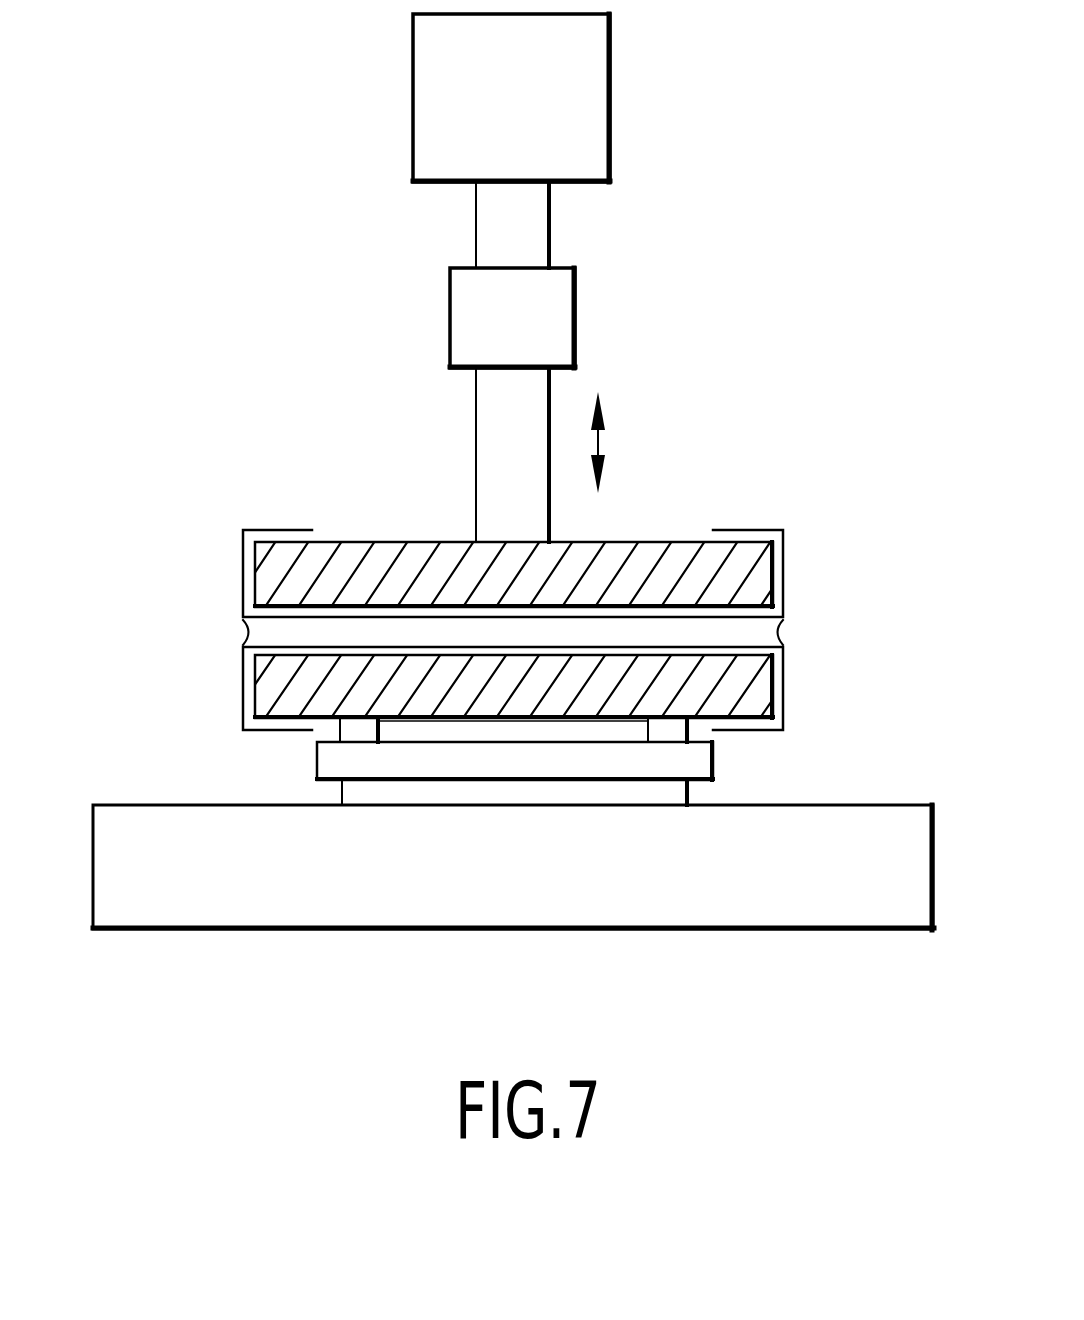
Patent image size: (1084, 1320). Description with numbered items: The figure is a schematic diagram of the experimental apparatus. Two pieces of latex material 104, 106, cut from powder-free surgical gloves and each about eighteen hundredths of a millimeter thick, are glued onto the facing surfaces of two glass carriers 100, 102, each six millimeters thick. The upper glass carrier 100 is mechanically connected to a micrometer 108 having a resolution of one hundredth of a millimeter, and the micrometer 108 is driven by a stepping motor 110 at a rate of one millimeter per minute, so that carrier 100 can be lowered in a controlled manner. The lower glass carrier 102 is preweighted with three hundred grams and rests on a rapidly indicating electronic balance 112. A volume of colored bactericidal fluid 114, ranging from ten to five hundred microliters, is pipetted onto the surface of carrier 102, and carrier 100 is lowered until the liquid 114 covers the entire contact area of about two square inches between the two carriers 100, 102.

The glass carrier 100 is at (660, 548).
The glass carrier 102 is at (720, 702).
The latex material 104 is at (783, 570).
The latex material 106 is at (783, 683).
The micrometer 108 is at (536, 340).
The stepping motor 110 is at (534, 128).
The electronic balance 112 is at (549, 903).
The bactericidal fluid 114 is at (272, 632).